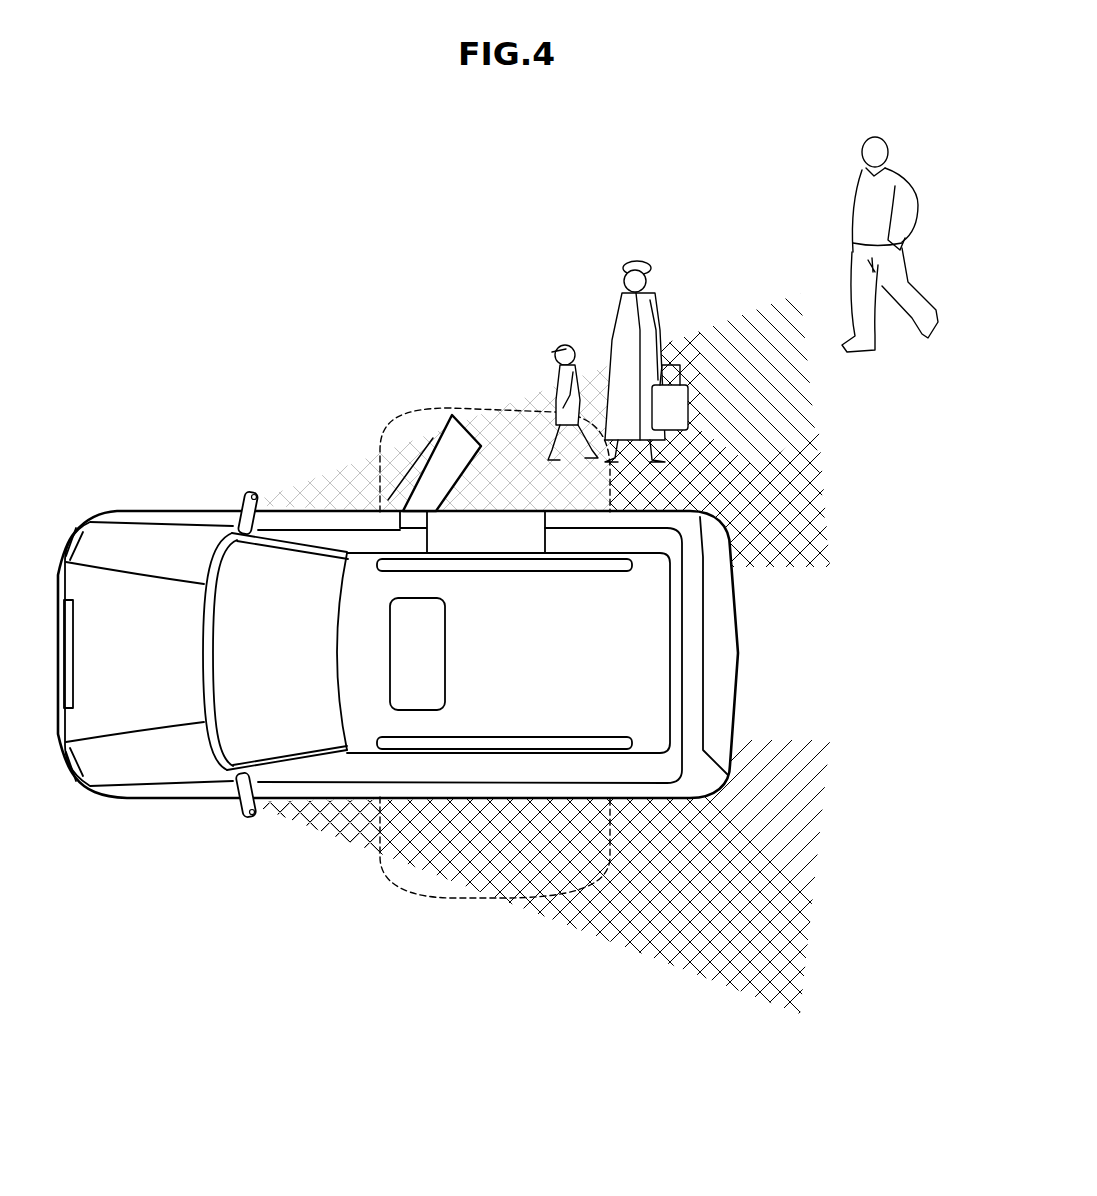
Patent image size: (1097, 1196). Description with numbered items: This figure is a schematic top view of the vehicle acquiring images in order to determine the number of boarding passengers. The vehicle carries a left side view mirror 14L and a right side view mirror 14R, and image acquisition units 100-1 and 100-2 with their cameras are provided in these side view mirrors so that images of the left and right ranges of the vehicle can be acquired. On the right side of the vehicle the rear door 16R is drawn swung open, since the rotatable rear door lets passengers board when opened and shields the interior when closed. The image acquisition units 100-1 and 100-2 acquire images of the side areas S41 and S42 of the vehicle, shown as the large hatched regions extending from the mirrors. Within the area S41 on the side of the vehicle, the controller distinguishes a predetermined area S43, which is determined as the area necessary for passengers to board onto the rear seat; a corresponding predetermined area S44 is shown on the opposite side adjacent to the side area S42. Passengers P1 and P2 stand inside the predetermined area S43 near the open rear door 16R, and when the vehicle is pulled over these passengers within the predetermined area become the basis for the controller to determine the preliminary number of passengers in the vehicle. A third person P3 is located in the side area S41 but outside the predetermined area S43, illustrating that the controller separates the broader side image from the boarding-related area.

The right side view mirror 14R is at (243, 502).
The left side view mirror 14L is at (241, 802).
The image acquisition unit 100-2 is at (256, 492).
The image acquisition unit 100-1 is at (254, 815).
The rear door 16R is at (433, 438).
The passenger P1 is at (560, 340).
The passenger P2 is at (632, 258).
The passenger P3 is at (903, 187).
The area on the side of the vehicle S41 is at (790, 393).
The side area of the vehicle S42 is at (797, 872).
The predetermined area S43 is at (420, 408).
The predetermined area S44 is at (443, 898).